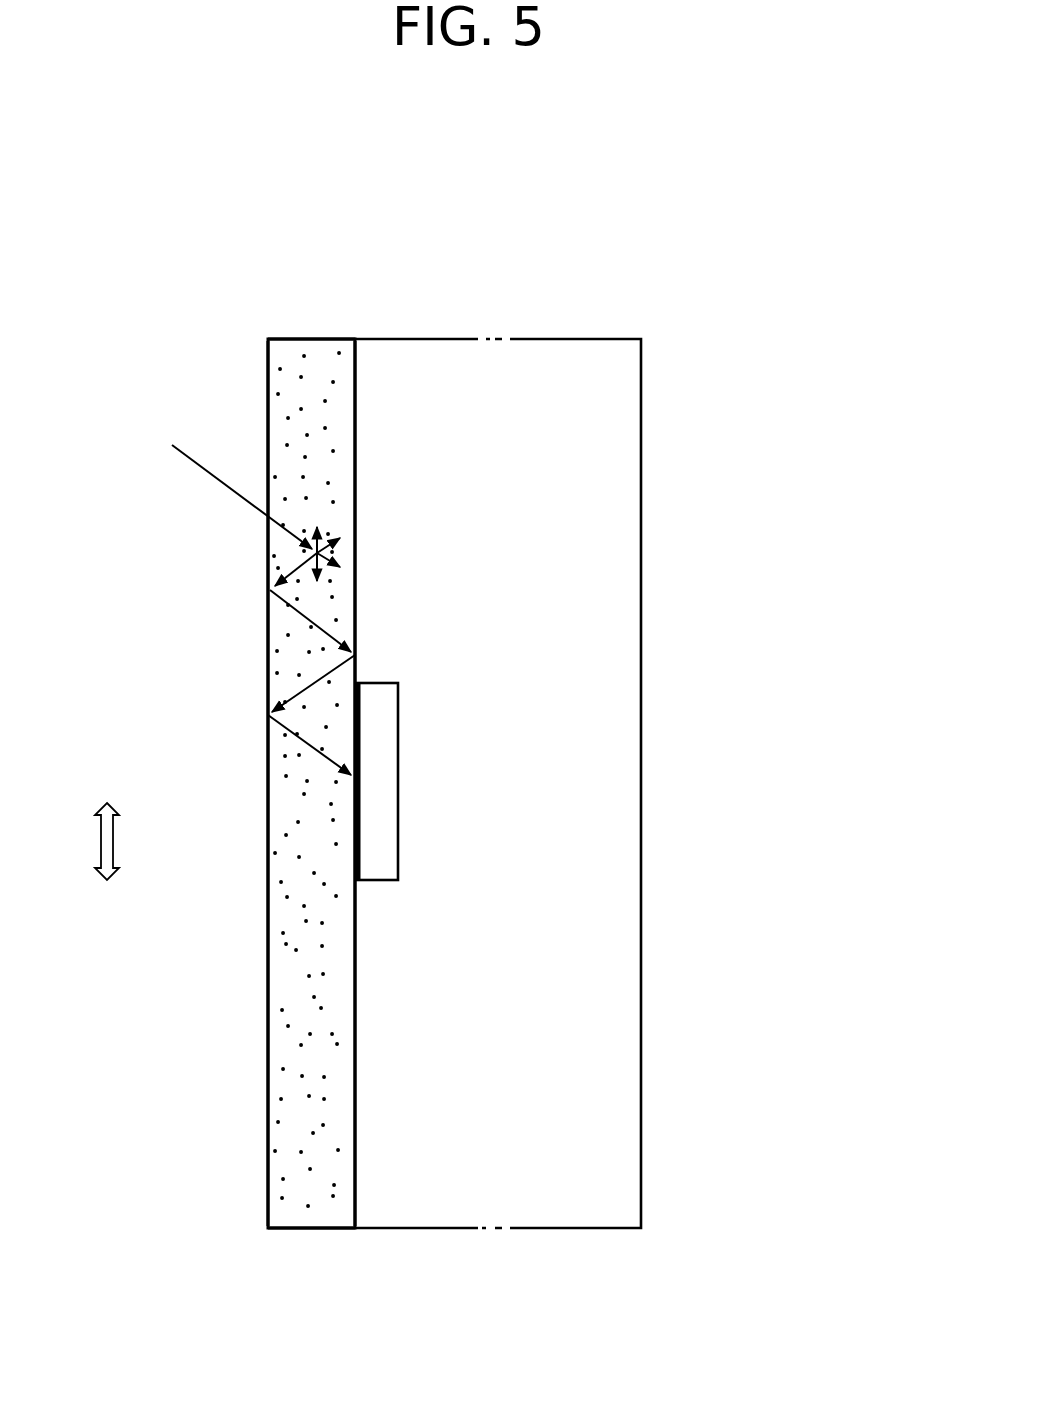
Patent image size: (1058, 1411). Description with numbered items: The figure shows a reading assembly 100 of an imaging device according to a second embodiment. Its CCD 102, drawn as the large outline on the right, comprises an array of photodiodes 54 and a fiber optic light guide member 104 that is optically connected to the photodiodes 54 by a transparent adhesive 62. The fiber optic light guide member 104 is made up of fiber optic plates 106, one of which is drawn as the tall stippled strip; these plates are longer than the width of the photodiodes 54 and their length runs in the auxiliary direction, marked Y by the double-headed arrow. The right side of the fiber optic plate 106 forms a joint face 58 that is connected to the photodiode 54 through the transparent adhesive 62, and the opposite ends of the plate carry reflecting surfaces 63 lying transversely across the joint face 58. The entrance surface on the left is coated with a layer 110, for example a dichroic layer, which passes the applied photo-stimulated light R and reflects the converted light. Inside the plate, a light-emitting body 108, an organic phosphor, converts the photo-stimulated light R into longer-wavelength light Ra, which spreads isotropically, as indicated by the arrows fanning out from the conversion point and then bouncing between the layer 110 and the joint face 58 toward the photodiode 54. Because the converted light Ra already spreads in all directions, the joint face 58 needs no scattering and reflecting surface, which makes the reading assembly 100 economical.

The reading assembly 100 is at (669, 161).
The CCD 102 is at (602, 434).
The fiber optic light guide member 104 is at (248, 370).
The fiber optic plate 106 is at (299, 992).
The light-emitting body 108 is at (352, 547).
The layer 110 is at (268, 1123).
The reflecting surface 63 is at (313, 339).
The joint face 58 is at (356, 1049).
The photodiode 54 is at (388, 783).
The transparent adhesive 62 is at (355, 840).
The photo-stimulated light R is at (195, 468).
The converted light Ra is at (305, 617).
The auxiliary direction Y is at (94, 841).